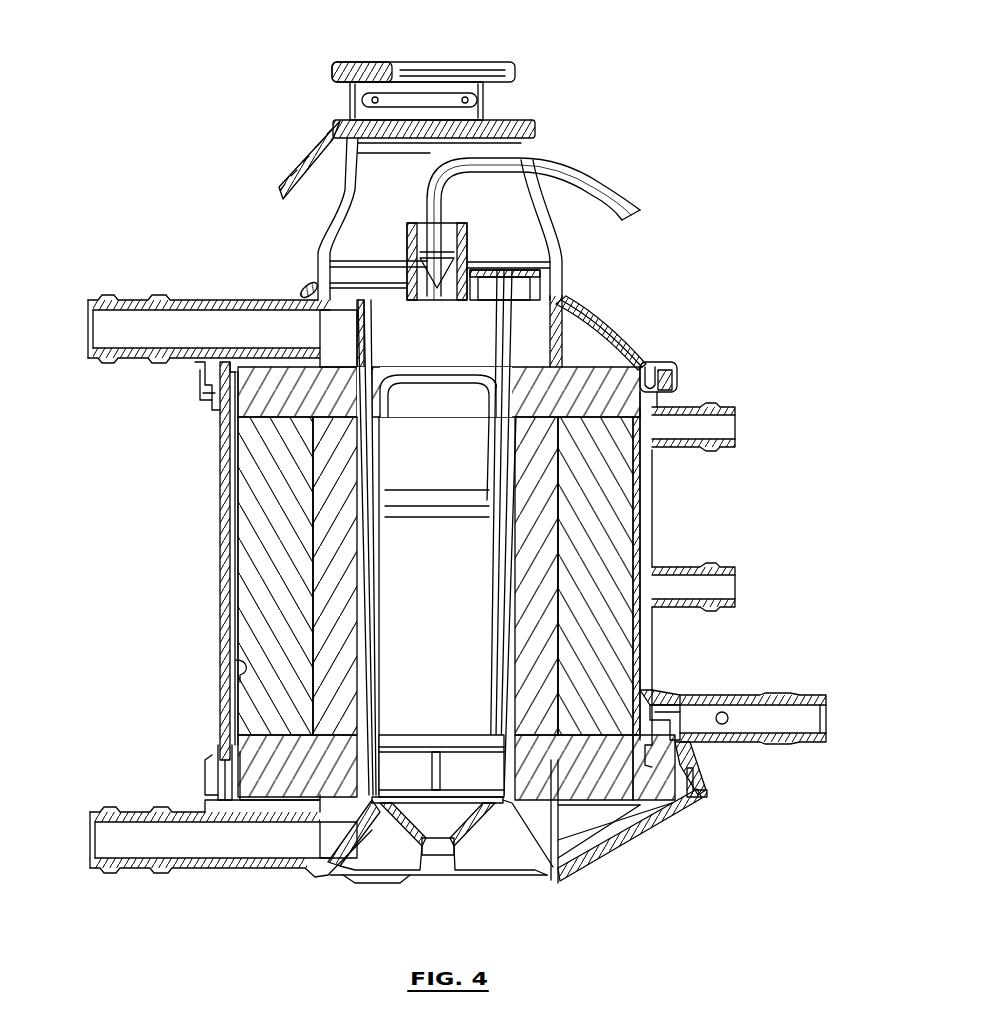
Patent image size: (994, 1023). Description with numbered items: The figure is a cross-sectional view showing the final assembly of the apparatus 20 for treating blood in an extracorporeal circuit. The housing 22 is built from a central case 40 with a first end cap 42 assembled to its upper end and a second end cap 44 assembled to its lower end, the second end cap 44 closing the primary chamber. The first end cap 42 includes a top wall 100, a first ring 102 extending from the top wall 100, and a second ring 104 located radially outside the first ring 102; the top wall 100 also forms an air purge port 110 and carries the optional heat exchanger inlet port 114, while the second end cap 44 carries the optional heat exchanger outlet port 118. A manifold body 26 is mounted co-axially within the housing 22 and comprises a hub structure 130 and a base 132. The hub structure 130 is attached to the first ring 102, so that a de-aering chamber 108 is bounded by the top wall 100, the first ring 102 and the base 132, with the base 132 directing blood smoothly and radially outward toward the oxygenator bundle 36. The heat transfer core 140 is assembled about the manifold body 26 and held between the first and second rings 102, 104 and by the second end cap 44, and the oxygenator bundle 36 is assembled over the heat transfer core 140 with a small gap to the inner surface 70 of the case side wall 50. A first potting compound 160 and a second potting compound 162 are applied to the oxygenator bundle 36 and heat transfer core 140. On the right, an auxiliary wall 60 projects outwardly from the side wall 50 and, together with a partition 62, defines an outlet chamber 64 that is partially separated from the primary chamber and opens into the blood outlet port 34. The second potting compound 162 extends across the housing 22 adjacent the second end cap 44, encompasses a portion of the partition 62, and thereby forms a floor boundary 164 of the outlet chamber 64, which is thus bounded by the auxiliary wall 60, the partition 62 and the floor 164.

The apparatus 20 is at (642, 104).
The housing 22 is at (612, 322).
The manifold body 26 is at (470, 535).
The blood outlet port 34 is at (778, 692).
The oxygenator bundle 36 is at (263, 573).
The central case 40 is at (216, 525).
The first end cap 42 is at (650, 304).
The second end cap 44 is at (600, 872).
The side wall 50 is at (226, 625).
The auxiliary wall 60 is at (660, 690).
The partition 62 is at (668, 732).
The outlet chamber 64 is at (664, 712).
The inner surface 70 is at (238, 673).
The top wall 100 is at (302, 290).
The first ring 102 is at (512, 345).
The second ring 104 is at (565, 344).
The de-aering chamber 108 is at (472, 320).
The air purge port 110 is at (403, 240).
The heat exchanger inlet port 114 is at (180, 293).
The heat exchanger outlet port 118 is at (198, 870).
The hub structure 130 is at (362, 423).
The base 132 is at (505, 464).
The heat transfer core 140 is at (545, 580).
The first potting compound 160 is at (626, 378).
The second potting compound 162 is at (614, 793).
The floor boundary 164 is at (690, 800).